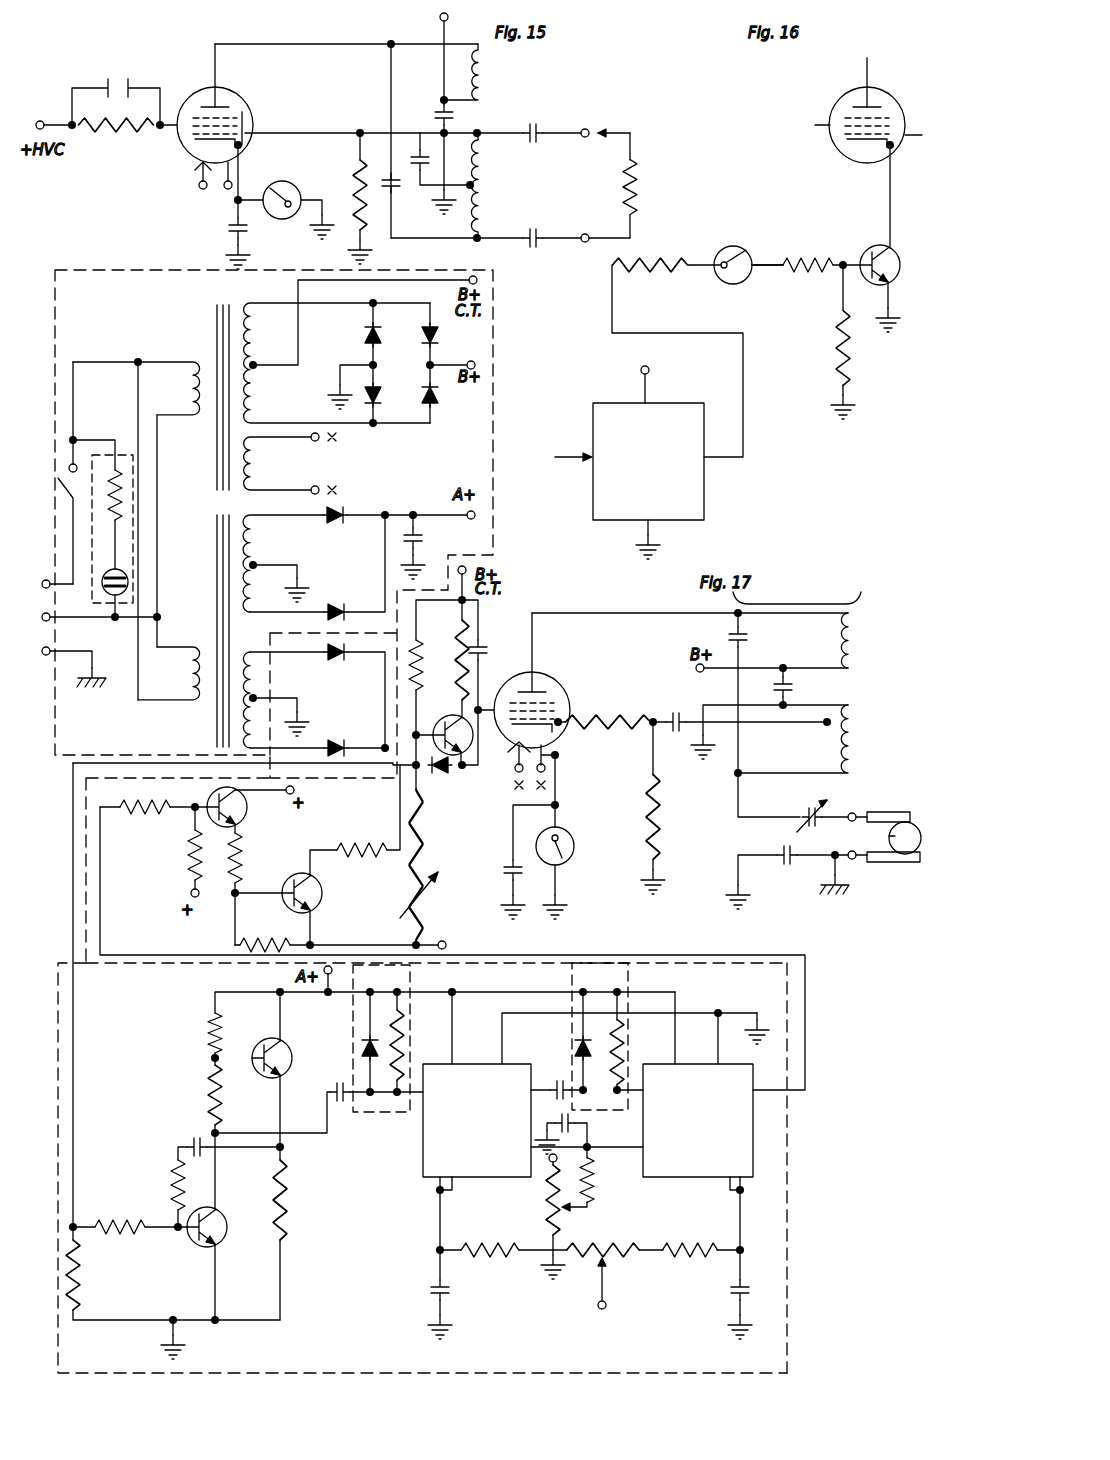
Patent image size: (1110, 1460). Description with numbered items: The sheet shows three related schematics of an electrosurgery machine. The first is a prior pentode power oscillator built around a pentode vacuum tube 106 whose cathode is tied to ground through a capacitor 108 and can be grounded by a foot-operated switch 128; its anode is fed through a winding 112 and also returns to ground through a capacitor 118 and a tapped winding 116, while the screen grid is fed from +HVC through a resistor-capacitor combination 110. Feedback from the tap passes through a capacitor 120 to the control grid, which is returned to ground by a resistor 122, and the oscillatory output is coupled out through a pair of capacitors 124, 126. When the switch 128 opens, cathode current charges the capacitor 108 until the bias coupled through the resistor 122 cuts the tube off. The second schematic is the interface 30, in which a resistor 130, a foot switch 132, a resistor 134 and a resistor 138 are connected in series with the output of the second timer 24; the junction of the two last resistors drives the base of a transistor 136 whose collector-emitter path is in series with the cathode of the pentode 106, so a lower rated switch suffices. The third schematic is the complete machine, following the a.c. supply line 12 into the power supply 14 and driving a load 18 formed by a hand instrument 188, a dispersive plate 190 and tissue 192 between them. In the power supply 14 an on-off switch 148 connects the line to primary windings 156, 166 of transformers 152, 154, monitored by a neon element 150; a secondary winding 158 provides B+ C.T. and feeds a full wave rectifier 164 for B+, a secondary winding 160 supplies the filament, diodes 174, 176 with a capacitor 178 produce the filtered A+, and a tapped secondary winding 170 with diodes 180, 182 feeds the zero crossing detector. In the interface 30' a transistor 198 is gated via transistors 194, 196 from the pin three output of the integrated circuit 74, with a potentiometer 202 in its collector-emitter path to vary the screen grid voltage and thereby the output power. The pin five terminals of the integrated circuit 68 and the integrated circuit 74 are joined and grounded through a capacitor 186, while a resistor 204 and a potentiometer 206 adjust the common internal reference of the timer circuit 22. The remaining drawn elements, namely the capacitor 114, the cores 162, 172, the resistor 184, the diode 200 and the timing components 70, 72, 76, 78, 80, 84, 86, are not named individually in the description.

In FIG. 17, the a.c. supply line 12 is at (46, 668).
In FIG. 17, the power supply 14 is at (658, 655).
In FIG. 17, the load 18 is at (902, 888).
In FIG. 17, the first timer 22 is at (826, 1188).
In FIG. 16, the second timer 24 is at (712, 389).
In FIG. 16, the interface 30 is at (735, 242).
In FIG. 17, the interface 30' is at (187, 870).
In FIG. 17, the integrated circuit 68 is at (490, 1174).
In FIG. 17, the timing capacitor 70 is at (436, 1288).
In FIG. 17, the timing resistor 72 is at (488, 1247).
In FIG. 17, the integrated circuit 74 is at (673, 1170).
In FIG. 17, the timing capacitor 76 is at (732, 1282).
In FIG. 17, the timing resistor 78 is at (706, 1244).
In FIG. 17, the potentiometer wiper 80 is at (577, 1262).
In FIG. 17, the variable resistor 84 is at (628, 1245).
In FIG. 17, the protective diode-resistor network 86 is at (386, 1113).
In FIG. 15, the pentode vacuum tube 106 is at (240, 112).
In FIG. 16, the pentode vacuum tube 106 is at (832, 106).
In FIG. 17, the pentode vacuum tube 106 is at (560, 688).
In FIG. 15, the capacitor 108 is at (226, 222).
In FIG. 17, the capacitor 108 is at (511, 865).
In FIG. 15, the resistor-capacitor combination 110 is at (124, 105).
In FIG. 15, the winding 112 is at (488, 72).
In FIG. 17, the winding 112 is at (846, 649).
In FIG. 15, the capacitor 114 is at (462, 124).
In FIG. 17, the capacitor 114 is at (793, 685).
In FIG. 15, the tapped winding 116 is at (488, 168).
In FIG. 17, the tapped winding 116 is at (846, 734).
In FIG. 15, the capacitor 118 is at (395, 190).
In FIG. 17, the capacitor 118 is at (748, 636).
In FIG. 15, the capacitor 120 is at (414, 150).
In FIG. 17, the capacitor 120 is at (674, 713).
In FIG. 15, the resistor 122 is at (356, 167).
In FIG. 17, the resistor 122 is at (655, 795).
In FIG. 15, the capacitor 124 is at (539, 126).
In FIG. 17, the capacitor 124 is at (800, 805).
In FIG. 15, the capacitor 126 is at (540, 230).
In FIG. 17, the capacitor 126 is at (780, 864).
In FIG. 15, the switch 128 is at (279, 218).
In FIG. 17, the switch 128 is at (573, 856).
In FIG. 16, the resistor 130 is at (665, 274).
In FIG. 16, the foot switch 132 is at (731, 276).
In FIG. 16, the resistor 134 is at (820, 272).
In FIG. 16, the transistor 136 is at (868, 246).
In FIG. 16, the resistor 138 is at (838, 342).
In FIG. 17, the on-off switch 148 is at (60, 492).
In FIG. 17, the neon element 150 is at (126, 453).
In FIG. 17, the transformer 152 is at (218, 489).
In FIG. 17, the transformer 154 is at (207, 552).
In FIG. 17, the primary winding 156 is at (191, 362).
In FIG. 17, the secondary winding 158 is at (245, 306).
In FIG. 17, the secondary winding 160 is at (256, 462).
In FIG. 17, the transformer core 162 is at (215, 318).
In FIG. 17, the full wave rectifier 164 is at (250, 536).
In FIG. 17, the primary winding 166 is at (202, 646).
In FIG. 17, the tapped secondary winding 170 is at (252, 658).
In FIG. 17, the transformer core 172 is at (220, 716).
In FIG. 17, the diode 174 is at (332, 522).
In FIG. 17, the diode 176 is at (345, 592).
In FIG. 17, the capacitor 178 is at (420, 540).
In FIG. 17, the diode 180 is at (334, 658).
In FIG. 17, the diode 182 is at (330, 740).
In FIG. 17, the plate resistor 184 is at (628, 734).
In FIG. 17, the capacitor 186 is at (576, 1124).
In FIG. 17, the hand instrument 188 is at (883, 811).
In FIG. 17, the dispersive plate 190 is at (885, 865).
In FIG. 17, the tissue 192 is at (882, 838).
In FIG. 17, the transistor 194 is at (242, 822).
In FIG. 17, the transistor 196 is at (322, 896).
In FIG. 17, the transistor 198 is at (456, 716).
In FIG. 17, the diode 200 is at (441, 768).
In FIG. 17, the potentiometer 202 is at (432, 895).
In FIG. 17, the resistor 204 is at (590, 1180).
In FIG. 17, the potentiometer 206 is at (544, 1191).